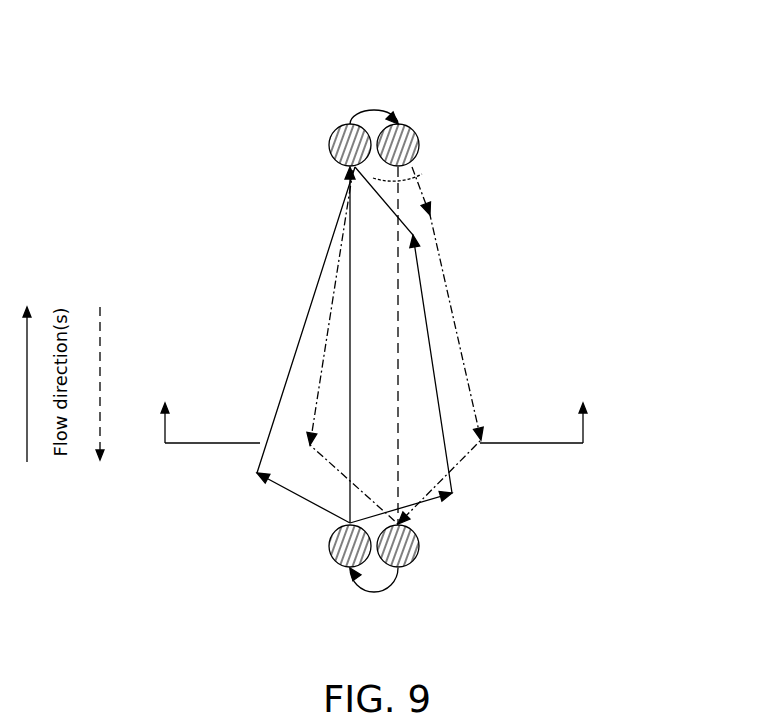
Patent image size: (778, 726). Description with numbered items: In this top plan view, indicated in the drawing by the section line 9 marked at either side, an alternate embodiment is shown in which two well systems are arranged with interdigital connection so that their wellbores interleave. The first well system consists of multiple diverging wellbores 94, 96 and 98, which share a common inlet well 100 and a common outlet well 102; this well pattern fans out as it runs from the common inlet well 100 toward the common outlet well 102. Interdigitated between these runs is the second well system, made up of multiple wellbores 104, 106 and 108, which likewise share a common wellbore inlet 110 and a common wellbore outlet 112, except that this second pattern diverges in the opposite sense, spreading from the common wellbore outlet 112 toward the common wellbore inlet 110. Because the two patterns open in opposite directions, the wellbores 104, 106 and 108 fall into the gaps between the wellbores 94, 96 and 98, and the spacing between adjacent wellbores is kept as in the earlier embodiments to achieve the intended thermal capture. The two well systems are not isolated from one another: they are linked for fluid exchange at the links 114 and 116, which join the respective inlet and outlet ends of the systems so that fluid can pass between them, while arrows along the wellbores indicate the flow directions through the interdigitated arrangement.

The section line 9 is at (168, 431).
The first yarn path 94 is at (282, 381).
The wellbore 96 is at (347, 333).
The wellbore 98 is at (446, 290).
The common inlet well 100 is at (329, 546).
The common outlet well 102 is at (328, 143).
The wellbore 104 is at (416, 158).
The wellbore 106 is at (388, 206).
The wellbore 108 is at (445, 240).
The common wellbore inlet 110 is at (422, 128).
The common wellbore outlet 112 is at (420, 546).
The fluid exchange link 114 is at (374, 592).
The fluid exchange link 116 is at (374, 110).